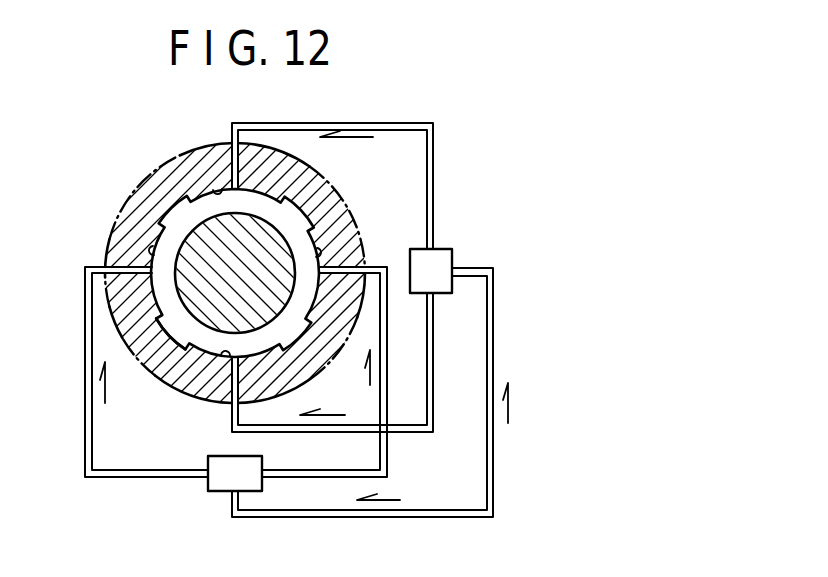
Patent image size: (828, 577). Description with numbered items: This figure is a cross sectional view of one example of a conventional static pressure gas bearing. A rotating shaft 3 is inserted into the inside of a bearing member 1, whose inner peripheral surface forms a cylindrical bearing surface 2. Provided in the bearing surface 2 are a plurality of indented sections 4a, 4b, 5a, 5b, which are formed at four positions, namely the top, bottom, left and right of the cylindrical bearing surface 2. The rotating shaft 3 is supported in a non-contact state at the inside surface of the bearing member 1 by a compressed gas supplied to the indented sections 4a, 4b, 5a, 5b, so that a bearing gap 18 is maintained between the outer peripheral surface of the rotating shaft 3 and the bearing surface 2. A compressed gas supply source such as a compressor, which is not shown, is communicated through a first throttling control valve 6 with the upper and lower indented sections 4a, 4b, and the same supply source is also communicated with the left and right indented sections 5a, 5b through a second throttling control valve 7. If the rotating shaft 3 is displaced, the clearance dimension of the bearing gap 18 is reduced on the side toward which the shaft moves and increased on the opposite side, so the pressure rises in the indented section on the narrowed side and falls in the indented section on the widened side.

The bearing member 1 is at (330, 194).
The bearing surface 2 is at (190, 217).
The rotating shaft 3 is at (262, 225).
The indented section 4a is at (217, 189).
The indented section 4b is at (225, 356).
The indented section 5a is at (154, 250).
The indented section 5b is at (317, 251).
The first throttling control valve 6 is at (440, 254).
The second throttling control valve 7 is at (218, 482).
The bearing gap 18 is at (208, 346).